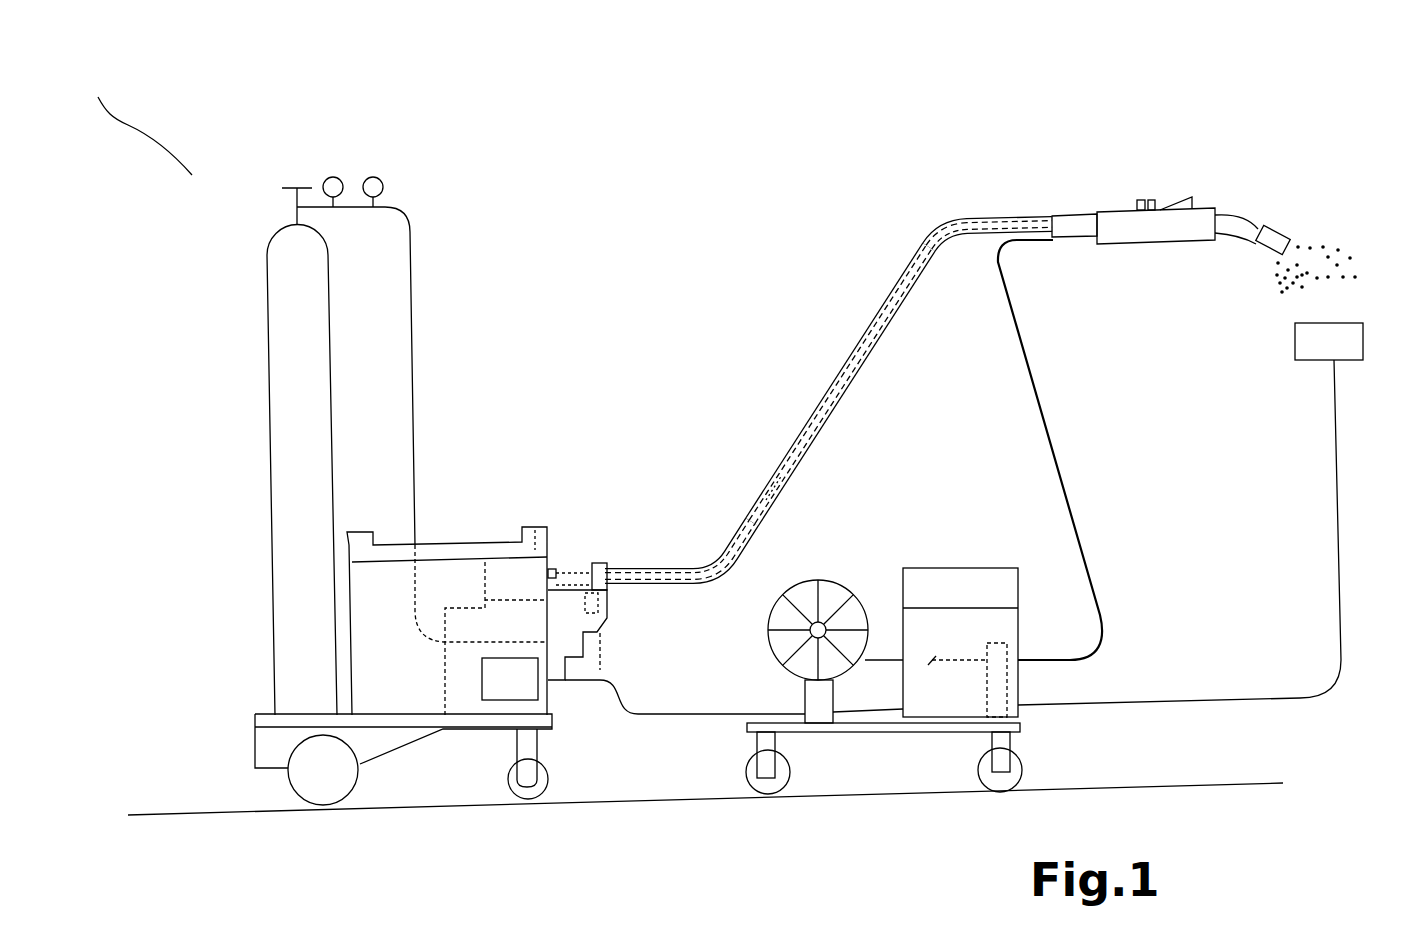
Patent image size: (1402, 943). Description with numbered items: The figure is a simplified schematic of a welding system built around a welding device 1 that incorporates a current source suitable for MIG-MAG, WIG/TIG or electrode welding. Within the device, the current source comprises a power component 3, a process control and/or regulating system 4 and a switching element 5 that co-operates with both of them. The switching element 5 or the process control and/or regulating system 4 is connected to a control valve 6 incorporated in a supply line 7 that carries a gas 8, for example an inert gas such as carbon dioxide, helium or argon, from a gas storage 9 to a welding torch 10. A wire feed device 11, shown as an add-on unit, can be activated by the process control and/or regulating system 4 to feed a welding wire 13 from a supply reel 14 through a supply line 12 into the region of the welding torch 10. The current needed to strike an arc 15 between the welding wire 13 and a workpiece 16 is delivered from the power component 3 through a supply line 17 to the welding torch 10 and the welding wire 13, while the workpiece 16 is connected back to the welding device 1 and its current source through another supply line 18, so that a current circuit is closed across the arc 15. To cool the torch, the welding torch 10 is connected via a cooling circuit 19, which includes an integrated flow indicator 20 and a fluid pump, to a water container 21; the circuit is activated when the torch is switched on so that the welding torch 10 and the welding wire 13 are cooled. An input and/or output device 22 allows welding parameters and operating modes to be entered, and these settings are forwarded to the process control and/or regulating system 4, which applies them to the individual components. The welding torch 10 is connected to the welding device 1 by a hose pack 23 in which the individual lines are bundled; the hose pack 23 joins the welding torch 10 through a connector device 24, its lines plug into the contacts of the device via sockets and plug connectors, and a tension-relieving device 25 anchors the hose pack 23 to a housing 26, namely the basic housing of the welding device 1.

The welding device 1 is at (136, 121).
The power component 3 is at (502, 687).
The process control and/or regulating system 4 is at (447, 677).
The switching element 5 is at (566, 714).
The control valve 6 is at (562, 652).
The supply line 7 is at (975, 238).
The gas 8 is at (1295, 213).
The gas storage 9 is at (297, 308).
The welding torch 10 is at (1204, 175).
The wire feed device 11 is at (1073, 750).
The supply line 12 is at (1058, 476).
The welding wire 13 is at (932, 662).
The supply reel 14 is at (826, 598).
The arc 15 is at (1301, 308).
The workpiece 16 is at (1343, 342).
The supply line 17 is at (907, 290).
The supply line 18 is at (1339, 556).
The cooling circuit 19 is at (762, 488).
The flow indicator 20 is at (552, 571).
The water container 21 is at (507, 572).
The input and/or output device 22 is at (541, 527).
The hose pack 23 is at (662, 568).
The connector device 24 is at (1073, 227).
The tension-relieving device 25 is at (601, 566).
The housing 26 is at (600, 603).